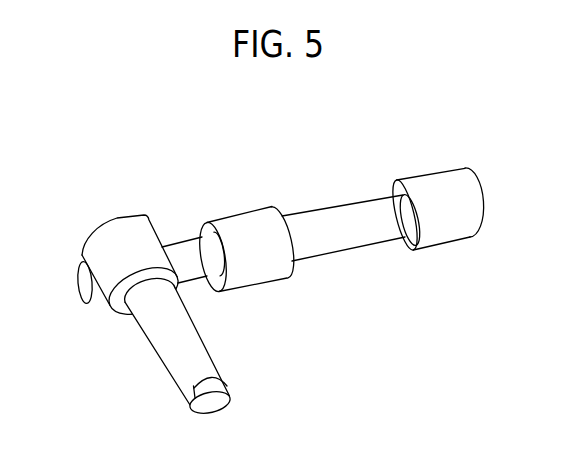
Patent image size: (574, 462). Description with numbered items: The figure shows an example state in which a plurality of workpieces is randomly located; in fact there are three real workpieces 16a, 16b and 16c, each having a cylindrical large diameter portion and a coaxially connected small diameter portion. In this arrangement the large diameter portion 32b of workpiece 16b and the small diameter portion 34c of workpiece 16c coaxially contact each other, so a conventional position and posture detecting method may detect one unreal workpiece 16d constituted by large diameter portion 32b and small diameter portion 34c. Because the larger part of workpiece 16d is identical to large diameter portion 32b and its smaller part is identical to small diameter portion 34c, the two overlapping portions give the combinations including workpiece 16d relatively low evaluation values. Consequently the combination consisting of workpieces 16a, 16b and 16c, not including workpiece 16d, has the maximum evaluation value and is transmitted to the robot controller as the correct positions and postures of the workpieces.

The workpiece 16a is at (141, 342).
The workpiece 16b is at (229, 196).
The workpiece 16c is at (442, 153).
The unreal workpiece 16d is at (418, 267).
The large diameter portion 32b is at (263, 203).
The small diameter portion 34c is at (355, 197).